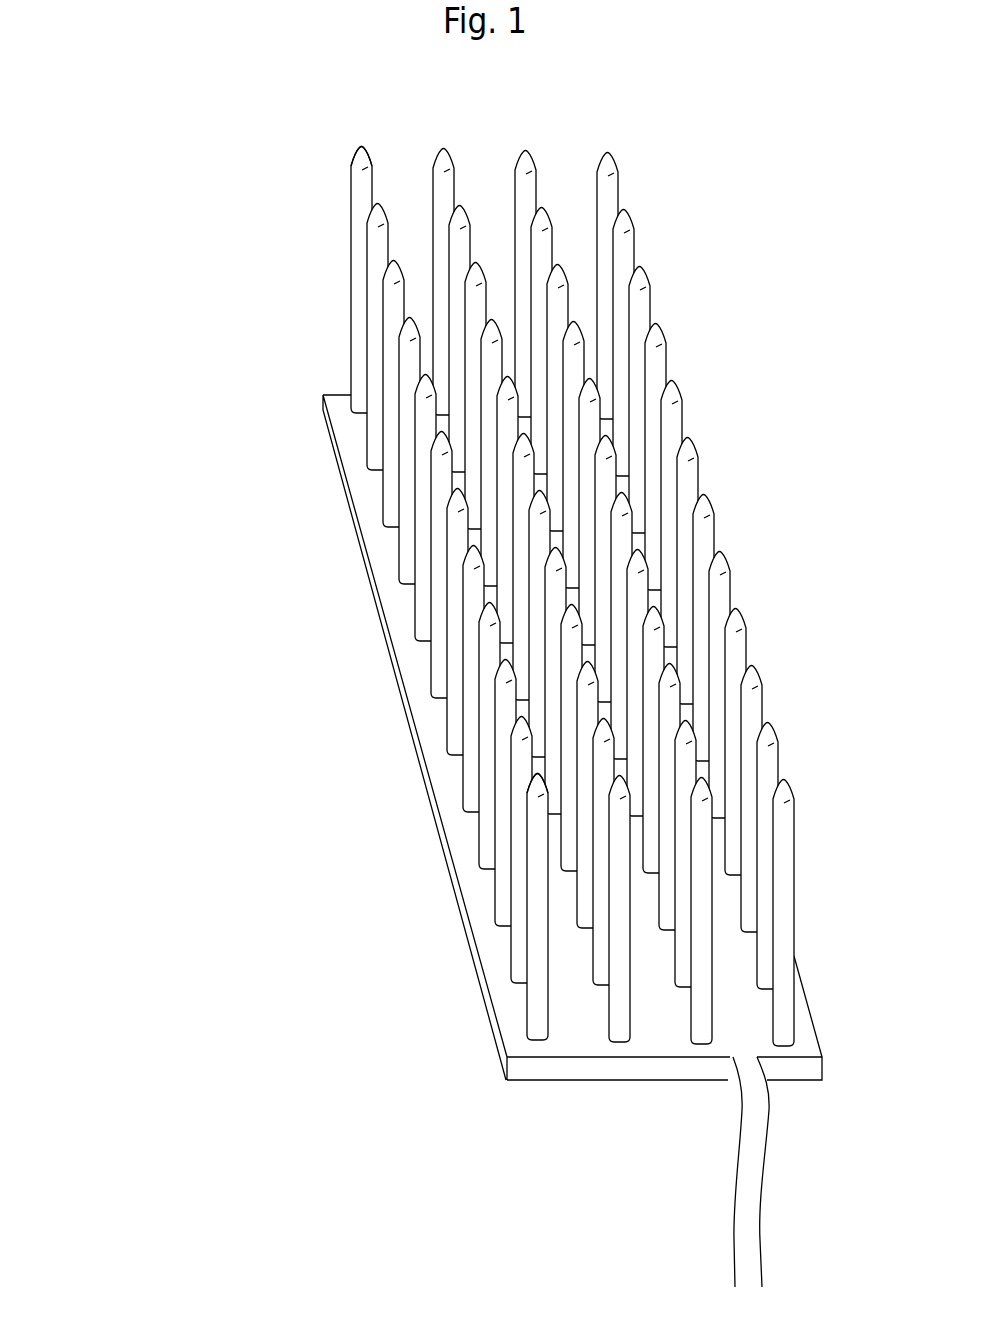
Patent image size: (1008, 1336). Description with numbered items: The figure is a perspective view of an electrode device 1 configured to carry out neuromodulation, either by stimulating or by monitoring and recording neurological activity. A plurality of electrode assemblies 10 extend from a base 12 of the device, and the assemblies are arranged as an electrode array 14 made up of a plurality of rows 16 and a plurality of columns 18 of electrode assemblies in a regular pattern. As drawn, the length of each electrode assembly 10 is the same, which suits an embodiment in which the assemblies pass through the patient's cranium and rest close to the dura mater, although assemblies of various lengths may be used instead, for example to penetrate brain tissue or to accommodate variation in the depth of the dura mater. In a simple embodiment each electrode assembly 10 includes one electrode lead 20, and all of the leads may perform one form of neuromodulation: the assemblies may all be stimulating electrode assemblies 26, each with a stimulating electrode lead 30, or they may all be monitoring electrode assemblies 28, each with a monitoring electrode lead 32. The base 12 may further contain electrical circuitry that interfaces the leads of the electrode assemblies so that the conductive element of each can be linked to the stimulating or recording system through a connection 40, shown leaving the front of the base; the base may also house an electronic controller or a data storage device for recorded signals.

The electrode device 1 is at (165, 533).
The electrode assembly 10 is at (533, 930).
The base 12 is at (338, 452).
The electrode array 14 is at (488, 584).
The row 16 is at (322, 578).
The column 18 is at (543, 1108).
The electrode lead 20 is at (540, 790).
The stimulating electrode assembly 26 is at (363, 203).
The monitoring electrode assembly 28 is at (380, 270).
The stimulating electrode lead 30 is at (350, 162).
The monitoring electrode lead 32 is at (383, 215).
The connection 40 is at (747, 1195).